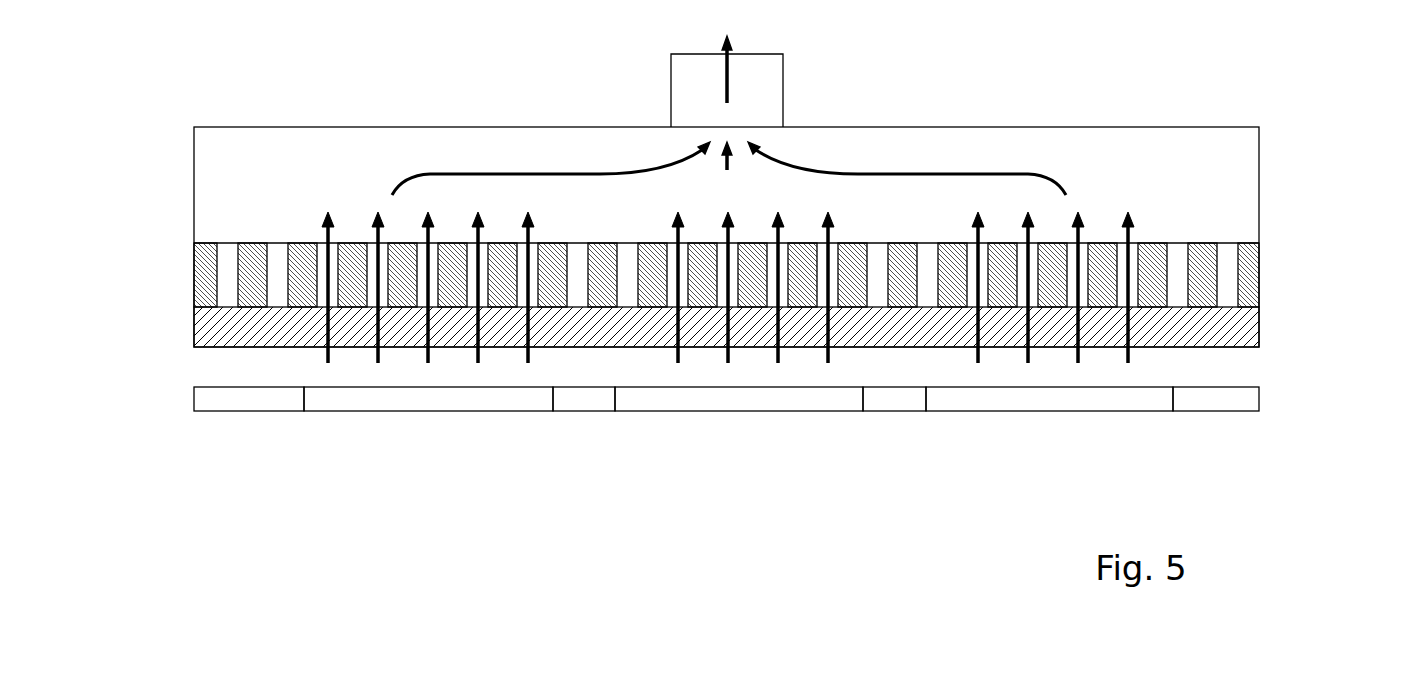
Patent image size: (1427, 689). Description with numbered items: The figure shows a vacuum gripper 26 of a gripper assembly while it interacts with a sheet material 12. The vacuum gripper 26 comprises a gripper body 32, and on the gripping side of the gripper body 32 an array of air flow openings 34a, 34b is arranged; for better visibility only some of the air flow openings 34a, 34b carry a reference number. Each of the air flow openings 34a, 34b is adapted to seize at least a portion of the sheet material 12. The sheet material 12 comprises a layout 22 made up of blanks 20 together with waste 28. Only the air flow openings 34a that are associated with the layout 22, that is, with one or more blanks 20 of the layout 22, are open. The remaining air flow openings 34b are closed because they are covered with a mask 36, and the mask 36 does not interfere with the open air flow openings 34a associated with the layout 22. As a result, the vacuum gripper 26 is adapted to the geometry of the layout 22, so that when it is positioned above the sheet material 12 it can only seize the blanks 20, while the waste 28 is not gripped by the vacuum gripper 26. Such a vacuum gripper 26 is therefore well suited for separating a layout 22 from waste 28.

The sheet material 12 is at (207, 450).
The blanks 20 is at (738, 470).
The layout 22 is at (423, 403).
The vacuum gripper 26 is at (470, 120).
The waste 28 is at (265, 403).
The gripper body 32 is at (1259, 176).
The air flow openings 34a is at (323, 268).
The air flow openings 34b is at (273, 268).
The mask 36 is at (1245, 328).